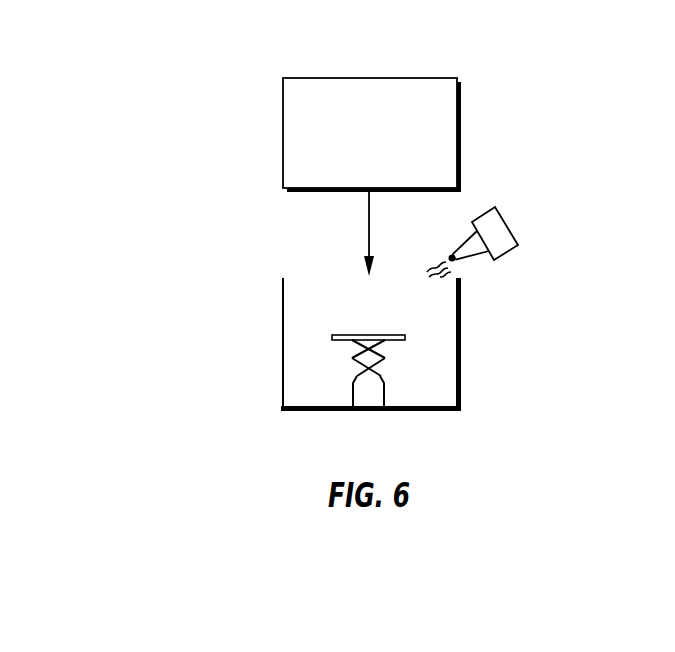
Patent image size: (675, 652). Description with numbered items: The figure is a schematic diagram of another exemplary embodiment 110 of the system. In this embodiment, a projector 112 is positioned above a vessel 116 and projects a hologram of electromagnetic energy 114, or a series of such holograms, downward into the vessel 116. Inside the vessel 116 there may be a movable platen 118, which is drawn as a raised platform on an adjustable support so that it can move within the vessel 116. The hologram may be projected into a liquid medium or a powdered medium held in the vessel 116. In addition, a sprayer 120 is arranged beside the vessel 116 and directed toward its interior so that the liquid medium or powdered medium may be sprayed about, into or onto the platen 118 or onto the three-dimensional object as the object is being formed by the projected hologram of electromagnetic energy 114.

The exemplary embodiment 110 is at (163, 70).
The projector 112 is at (329, 135).
The hologram of electromagnetic energy 114 is at (328, 233).
The vessel 116 is at (328, 344).
The movable platen 118 is at (356, 348).
The sprayer 120 is at (509, 228).